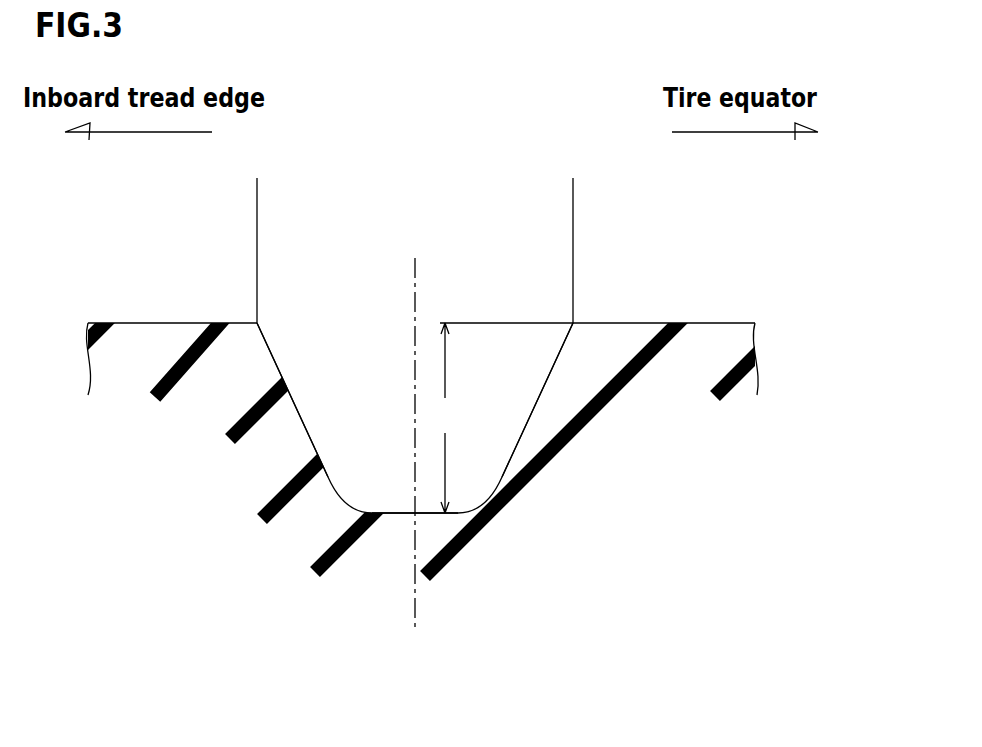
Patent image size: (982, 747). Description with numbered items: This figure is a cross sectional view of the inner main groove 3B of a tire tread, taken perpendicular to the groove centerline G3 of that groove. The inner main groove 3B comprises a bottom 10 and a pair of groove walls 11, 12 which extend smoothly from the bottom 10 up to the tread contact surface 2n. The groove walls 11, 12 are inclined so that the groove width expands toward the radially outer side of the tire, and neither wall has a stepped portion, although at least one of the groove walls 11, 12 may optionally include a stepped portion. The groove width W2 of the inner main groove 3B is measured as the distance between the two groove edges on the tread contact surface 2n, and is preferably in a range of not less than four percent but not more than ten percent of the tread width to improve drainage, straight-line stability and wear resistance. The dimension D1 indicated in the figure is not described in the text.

The tread contact surface 2n is at (185, 323).
The inner main groove 3B is at (436, 273).
The groove centerline G3 is at (415, 310).
The groove wall 12 is at (296, 410).
The groove wall 11 is at (534, 410).
The bottom 10 is at (407, 513).
The groove width W2 is at (562, 182).
The groove depth D1 is at (446, 418).